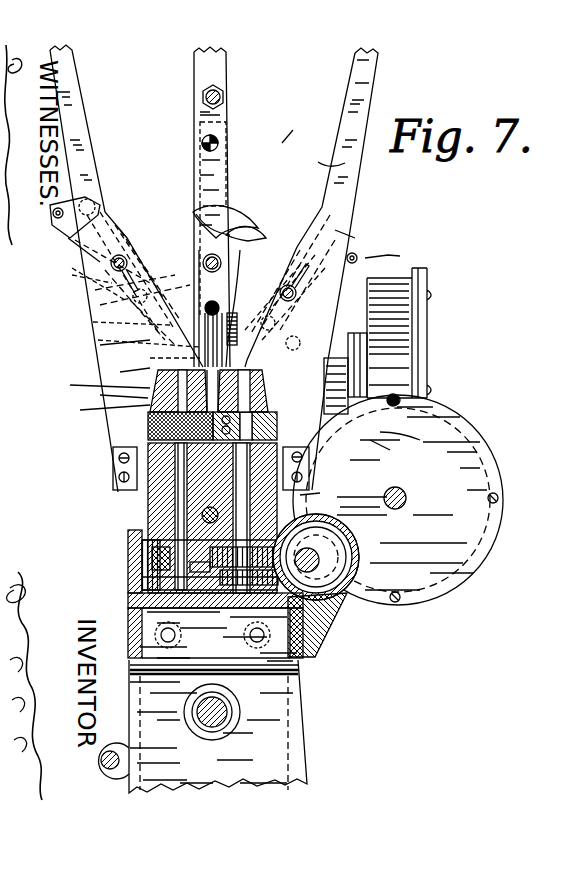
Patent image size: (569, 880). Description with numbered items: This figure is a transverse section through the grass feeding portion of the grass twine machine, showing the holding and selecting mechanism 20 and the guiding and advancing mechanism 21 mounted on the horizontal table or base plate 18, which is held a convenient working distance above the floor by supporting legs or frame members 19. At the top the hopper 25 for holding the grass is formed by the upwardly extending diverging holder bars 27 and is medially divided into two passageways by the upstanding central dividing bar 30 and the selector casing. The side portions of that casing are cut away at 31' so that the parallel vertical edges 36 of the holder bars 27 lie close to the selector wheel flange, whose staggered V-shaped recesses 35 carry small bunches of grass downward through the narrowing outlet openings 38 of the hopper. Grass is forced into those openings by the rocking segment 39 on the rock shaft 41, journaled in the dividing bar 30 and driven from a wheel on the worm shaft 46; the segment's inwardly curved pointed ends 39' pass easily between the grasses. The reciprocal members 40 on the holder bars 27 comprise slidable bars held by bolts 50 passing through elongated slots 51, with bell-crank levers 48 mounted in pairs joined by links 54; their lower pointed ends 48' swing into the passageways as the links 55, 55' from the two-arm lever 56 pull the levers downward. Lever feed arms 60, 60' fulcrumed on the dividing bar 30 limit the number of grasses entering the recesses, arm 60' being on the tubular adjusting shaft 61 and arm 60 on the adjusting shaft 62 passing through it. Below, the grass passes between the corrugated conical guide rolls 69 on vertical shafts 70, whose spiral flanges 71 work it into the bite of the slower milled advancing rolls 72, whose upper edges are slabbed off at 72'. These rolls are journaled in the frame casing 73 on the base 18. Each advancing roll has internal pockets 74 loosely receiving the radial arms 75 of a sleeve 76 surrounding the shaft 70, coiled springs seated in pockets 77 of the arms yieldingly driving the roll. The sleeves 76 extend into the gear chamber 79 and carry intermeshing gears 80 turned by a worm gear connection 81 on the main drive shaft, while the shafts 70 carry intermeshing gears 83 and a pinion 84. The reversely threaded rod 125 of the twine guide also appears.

The table or base plate 18 is at (280, 667).
The supporting legs or frame members 19 is at (297, 743).
The holding and selecting mechanism 20 is at (322, 158).
The guiding and advancing mechanism 21 is at (101, 411).
The hopper 25 is at (288, 128).
The holder bars 27 is at (145, 161).
The central dividing bar 30 is at (225, 95).
The cut away portions 31' is at (311, 324).
The staggered angular recesses 35 is at (100, 346).
The vertically extending edges 36 is at (120, 373).
The narrowing outlet openings 38 is at (428, 356).
The rocking segment 39 is at (225, 213).
The pointed ends 39' is at (221, 218).
The reciprocal members 40 is at (70, 241).
The rock shaft 41 is at (221, 260).
The worm shaft 46 is at (406, 497).
The bell-crank levers 48 is at (216, 223).
The lower pointed ends 48' is at (221, 276).
The bolts 50 is at (110, 267).
The elongated slots 51 is at (125, 293).
The links 54 is at (391, 253).
The links 55 is at (123, 340).
The link 55' is at (82, 282).
The two-arm lever 56 is at (319, 491).
The lever feed arm 60 is at (193, 308).
The lever feed arm 60' is at (245, 317).
The tubular adjusting shaft 61 is at (205, 320).
The adjusting shaft 62 is at (207, 300).
The conical guide rolls 69 is at (295, 399).
The vertically extending shafts 70 is at (152, 511).
The spirally trending flanges or wings 71 is at (114, 401).
The milled advancing rolls 72 is at (239, 431).
The slabbed-off edge portions 72' is at (156, 426).
The frame casing 73 is at (135, 534).
The internal pockets 74 is at (403, 438).
The radial arms 75 is at (390, 452).
The sleeve 76 is at (148, 498).
The pockets 77 is at (148, 431).
The gear chamber 79 is at (145, 581).
The intermeshing gears 80 is at (142, 563).
The worm gear connection 81 is at (338, 606).
The intermeshing gears 83 is at (225, 608).
The pinion 84 is at (243, 608).
The reversely threaded rod 125 is at (228, 721).